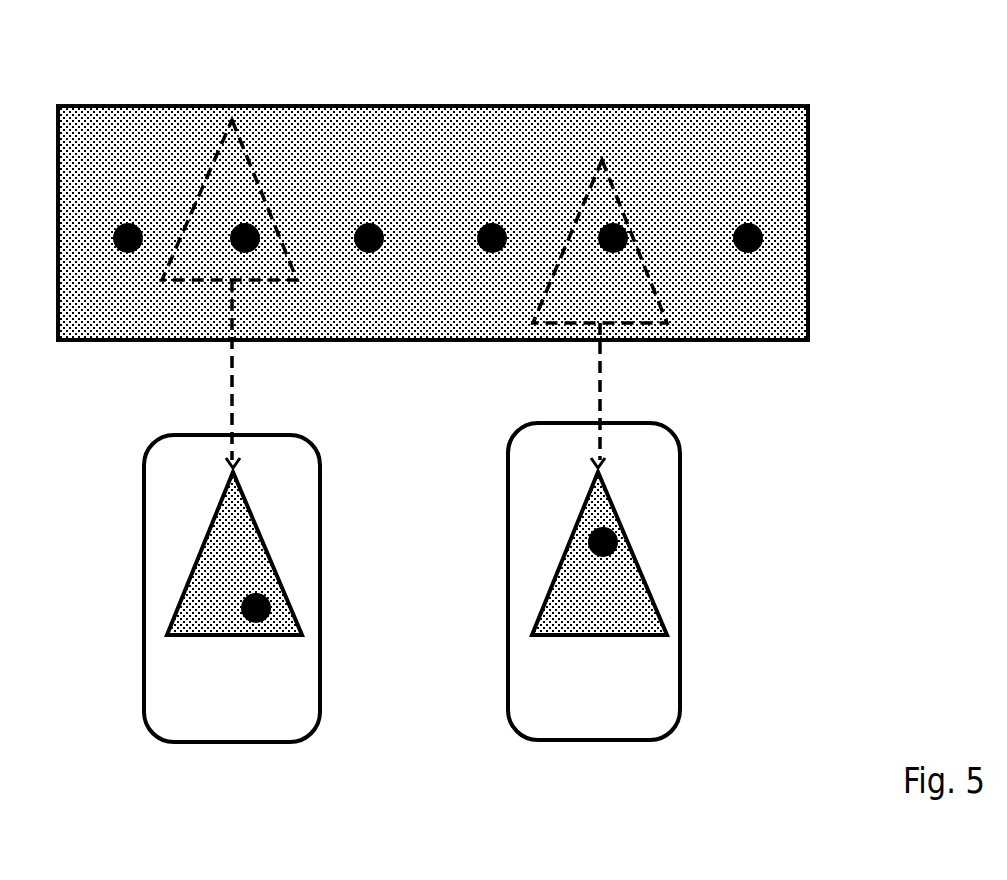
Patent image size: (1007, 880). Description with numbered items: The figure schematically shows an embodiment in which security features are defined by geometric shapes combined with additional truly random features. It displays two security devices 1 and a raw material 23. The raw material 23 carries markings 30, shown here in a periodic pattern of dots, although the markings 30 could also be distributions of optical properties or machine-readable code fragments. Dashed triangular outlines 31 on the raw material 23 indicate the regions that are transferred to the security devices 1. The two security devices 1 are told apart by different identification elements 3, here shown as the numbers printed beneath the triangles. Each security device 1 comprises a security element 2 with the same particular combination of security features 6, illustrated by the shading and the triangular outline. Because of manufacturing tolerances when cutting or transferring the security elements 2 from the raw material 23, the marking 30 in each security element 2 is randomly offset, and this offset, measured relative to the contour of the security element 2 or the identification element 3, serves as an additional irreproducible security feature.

The security device 1 is at (412, 642).
The security element 2 is at (417, 672).
The identification element 3 is at (415, 726).
The particular combination of security features 6 is at (417, 528).
The raw material 23 is at (809, 208).
The marking 30 is at (748, 238).
The luminaire cluster 31 is at (414, 294).